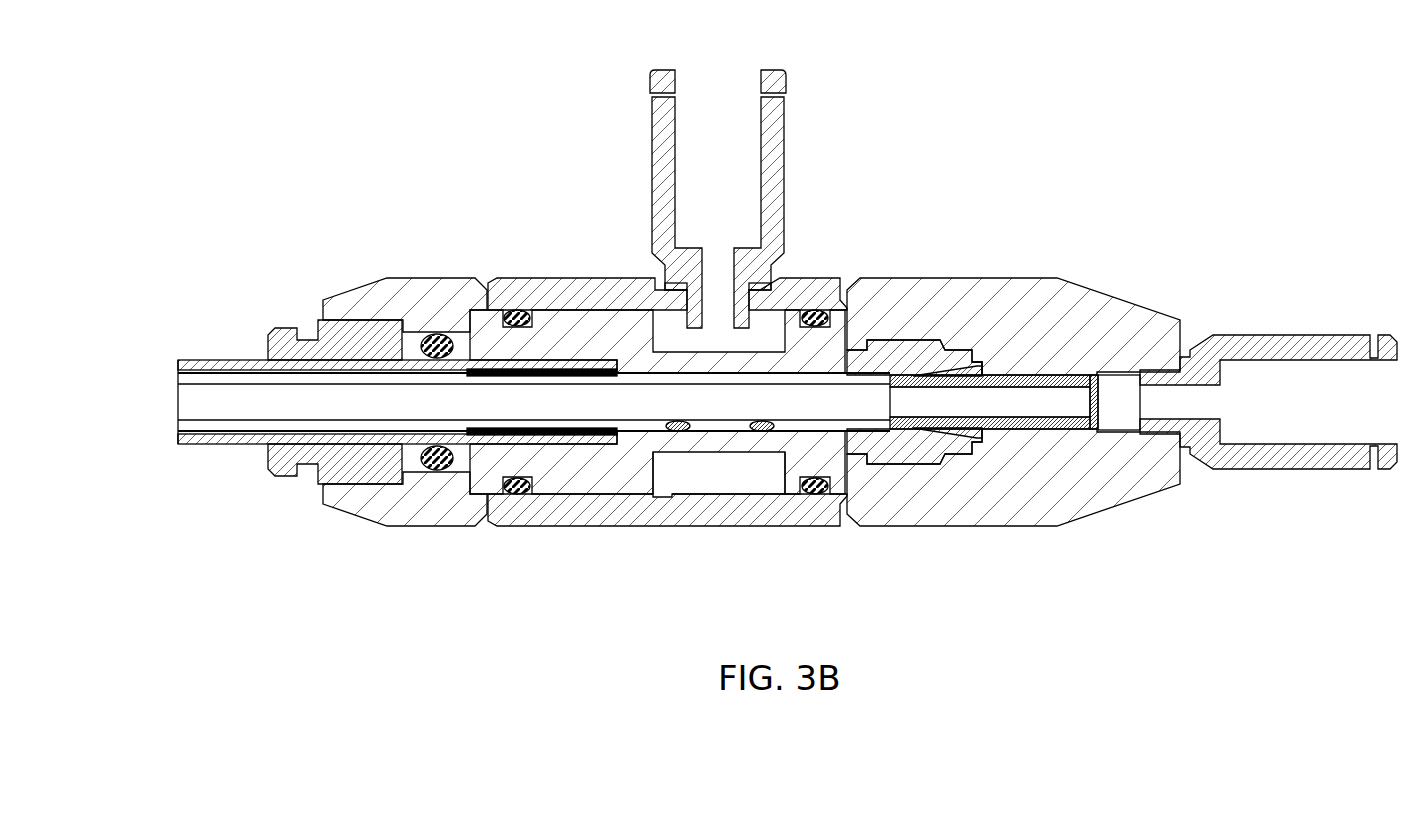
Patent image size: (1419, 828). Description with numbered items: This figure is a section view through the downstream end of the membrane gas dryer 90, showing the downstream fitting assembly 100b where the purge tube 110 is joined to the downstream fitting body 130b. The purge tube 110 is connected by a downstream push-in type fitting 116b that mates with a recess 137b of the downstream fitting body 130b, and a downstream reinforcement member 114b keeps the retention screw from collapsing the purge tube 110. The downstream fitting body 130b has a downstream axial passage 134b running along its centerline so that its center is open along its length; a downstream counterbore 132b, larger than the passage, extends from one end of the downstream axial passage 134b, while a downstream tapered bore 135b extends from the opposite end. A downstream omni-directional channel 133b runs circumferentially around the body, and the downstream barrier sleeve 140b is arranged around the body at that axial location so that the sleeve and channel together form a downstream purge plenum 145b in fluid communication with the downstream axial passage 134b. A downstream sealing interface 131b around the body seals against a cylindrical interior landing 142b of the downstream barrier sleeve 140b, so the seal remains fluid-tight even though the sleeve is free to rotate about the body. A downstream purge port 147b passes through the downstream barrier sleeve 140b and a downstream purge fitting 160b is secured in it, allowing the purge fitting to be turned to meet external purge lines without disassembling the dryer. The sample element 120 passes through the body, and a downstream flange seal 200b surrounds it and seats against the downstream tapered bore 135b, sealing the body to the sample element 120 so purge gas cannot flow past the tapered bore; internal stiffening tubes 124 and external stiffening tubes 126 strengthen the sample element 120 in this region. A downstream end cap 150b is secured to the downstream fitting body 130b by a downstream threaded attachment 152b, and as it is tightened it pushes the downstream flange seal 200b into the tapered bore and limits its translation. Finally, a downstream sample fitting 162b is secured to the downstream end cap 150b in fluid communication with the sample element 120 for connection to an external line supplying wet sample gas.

The membrane gas dryer 90 is at (200, 89).
The downstream fitting assembly 100b is at (381, 112).
The purge tube 110 is at (215, 462).
The downstream reinforcement member 114b is at (545, 372).
The downstream push-in type fitting 116b is at (285, 477).
The sample element 120 is at (160, 367).
The internal stiffening tube 124 is at (1065, 415).
The external stiffening tube 126 is at (1077, 428).
The downstream fitting body 130b is at (424, 546).
The downstream sealing interface 131b is at (517, 502).
The downstream counterbore 132b is at (483, 360).
The downstream omni-directional channel 133b is at (703, 478).
The downstream axial passage 134b is at (728, 430).
The downstream tapered bore 135b is at (913, 376).
The recess 137b is at (330, 318).
The downstream barrier sleeve 140b is at (663, 546).
The cylindrical interior landing 142b is at (665, 480).
The downstream purge plenum 145b is at (772, 478).
The downstream purge port 147b is at (688, 300).
The downstream end cap 150b is at (995, 546).
The downstream threaded attachment 152b is at (888, 340).
The downstream purge fitting 160b is at (788, 150).
The downstream sample fitting 162b is at (1283, 335).
The downstream flange seal 200b is at (982, 353).